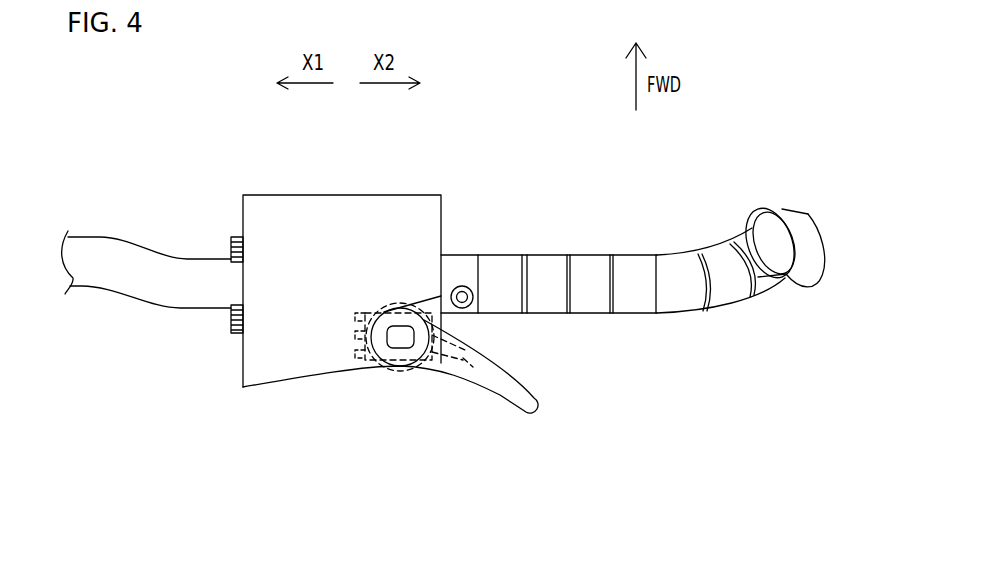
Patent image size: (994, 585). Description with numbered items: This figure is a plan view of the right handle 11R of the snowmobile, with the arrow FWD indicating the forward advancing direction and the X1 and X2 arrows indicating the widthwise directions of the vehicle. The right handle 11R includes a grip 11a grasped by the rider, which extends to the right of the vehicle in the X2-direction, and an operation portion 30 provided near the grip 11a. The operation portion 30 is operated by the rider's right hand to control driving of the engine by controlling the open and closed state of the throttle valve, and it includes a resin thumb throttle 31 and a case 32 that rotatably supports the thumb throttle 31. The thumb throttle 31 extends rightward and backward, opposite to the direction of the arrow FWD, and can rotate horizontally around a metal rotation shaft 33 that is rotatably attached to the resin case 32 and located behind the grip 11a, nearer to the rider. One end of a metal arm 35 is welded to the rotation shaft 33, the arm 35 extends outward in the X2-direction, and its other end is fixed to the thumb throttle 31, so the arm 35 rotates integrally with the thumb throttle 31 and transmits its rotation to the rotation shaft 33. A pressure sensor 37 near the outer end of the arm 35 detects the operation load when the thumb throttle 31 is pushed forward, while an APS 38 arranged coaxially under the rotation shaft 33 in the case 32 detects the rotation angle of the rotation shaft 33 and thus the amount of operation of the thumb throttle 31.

The right handle 11R is at (472, 151).
The grip 11a is at (637, 254).
The operation portion 30 is at (450, 443).
The thumb throttle 31 is at (537, 408).
The case 32 is at (282, 372).
The rotation shaft 33 is at (401, 340).
The arm 35 is at (470, 350).
The pressure sensor 37 is at (473, 367).
The APS (Accelerator Position Sensor) 38 is at (362, 370).